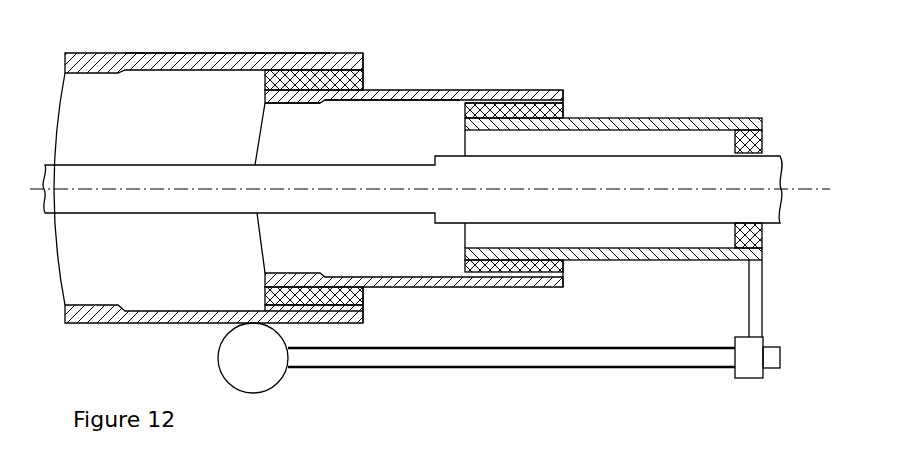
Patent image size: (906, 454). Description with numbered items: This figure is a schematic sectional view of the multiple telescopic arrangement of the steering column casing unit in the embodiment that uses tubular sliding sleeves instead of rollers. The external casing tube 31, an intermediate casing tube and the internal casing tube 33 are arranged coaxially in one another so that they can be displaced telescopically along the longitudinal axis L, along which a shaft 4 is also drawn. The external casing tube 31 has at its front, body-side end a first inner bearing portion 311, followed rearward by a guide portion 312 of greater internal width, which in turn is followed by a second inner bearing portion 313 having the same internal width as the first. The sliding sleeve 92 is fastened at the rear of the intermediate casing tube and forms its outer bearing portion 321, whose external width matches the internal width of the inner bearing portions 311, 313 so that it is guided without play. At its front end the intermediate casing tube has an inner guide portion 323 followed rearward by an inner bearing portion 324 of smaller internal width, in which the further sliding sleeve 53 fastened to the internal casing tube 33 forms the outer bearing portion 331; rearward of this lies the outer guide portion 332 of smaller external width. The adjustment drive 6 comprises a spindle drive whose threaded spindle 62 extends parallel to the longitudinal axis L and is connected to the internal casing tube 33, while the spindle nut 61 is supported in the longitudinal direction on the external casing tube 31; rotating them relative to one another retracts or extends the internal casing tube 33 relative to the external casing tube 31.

The external casing tube 31 is at (208, 167).
The first inner bearing portion 311 is at (92, 60).
The guide portion 312 is at (217, 50).
The second inner bearing portion 313 is at (335, 56).
The outer bearing portion 321 is at (365, 64).
The sliding sleeve 92 is at (366, 80).
The outer guide portion 332 is at (428, 90).
The inner guide portion 323 is at (410, 105).
The inner bearing portion 324 is at (287, 106).
The sealing ring 53 is at (528, 100).
The outer bearing portion 331 is at (564, 100).
The internal casing tube 33 is at (619, 118).
The rod 4 is at (805, 169).
The longitudinal axis L is at (826, 190).
The adjustment drive 6 is at (253, 375).
The threaded spindle 62 is at (617, 369).
The spindle nut 61 is at (746, 355).